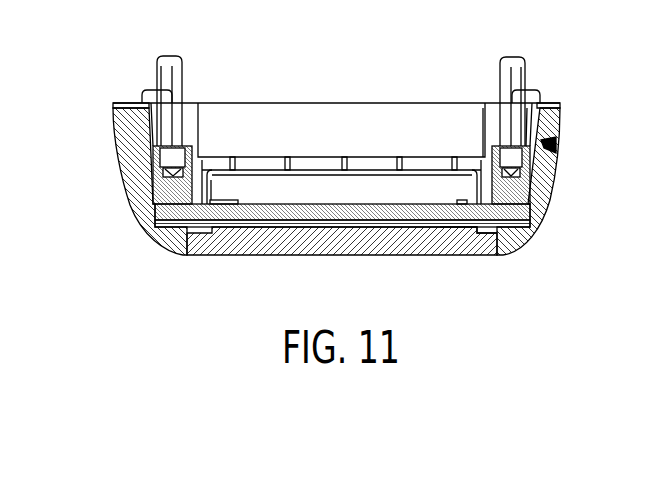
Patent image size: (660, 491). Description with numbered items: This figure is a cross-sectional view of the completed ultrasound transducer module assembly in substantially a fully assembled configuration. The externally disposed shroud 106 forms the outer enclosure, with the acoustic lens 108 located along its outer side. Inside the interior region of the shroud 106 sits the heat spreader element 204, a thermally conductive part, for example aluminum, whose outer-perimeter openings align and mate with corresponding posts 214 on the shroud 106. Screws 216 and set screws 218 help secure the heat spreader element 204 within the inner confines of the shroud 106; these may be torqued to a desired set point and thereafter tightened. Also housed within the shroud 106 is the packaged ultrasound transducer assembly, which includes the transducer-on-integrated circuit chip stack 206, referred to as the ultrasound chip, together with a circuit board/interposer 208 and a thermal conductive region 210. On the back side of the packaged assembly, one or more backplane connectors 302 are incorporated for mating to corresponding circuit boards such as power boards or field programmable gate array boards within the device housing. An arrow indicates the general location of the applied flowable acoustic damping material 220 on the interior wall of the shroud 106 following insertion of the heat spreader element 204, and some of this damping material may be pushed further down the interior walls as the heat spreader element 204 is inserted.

The shroud 106 is at (132, 128).
The acoustic lens 108 is at (218, 238).
The heat spreader element 204 is at (263, 112).
The transducer-on-integrated circuit chip stack 206 is at (287, 225).
The circuit board/interposer 208 is at (498, 210).
The thermal conductive region 210 is at (445, 225).
The post 214 is at (527, 68).
The screw 216 is at (550, 102).
The set screw 218 is at (165, 170).
The flowable acoustic damping material 220 is at (556, 158).
The backplane connector 302 is at (355, 182).